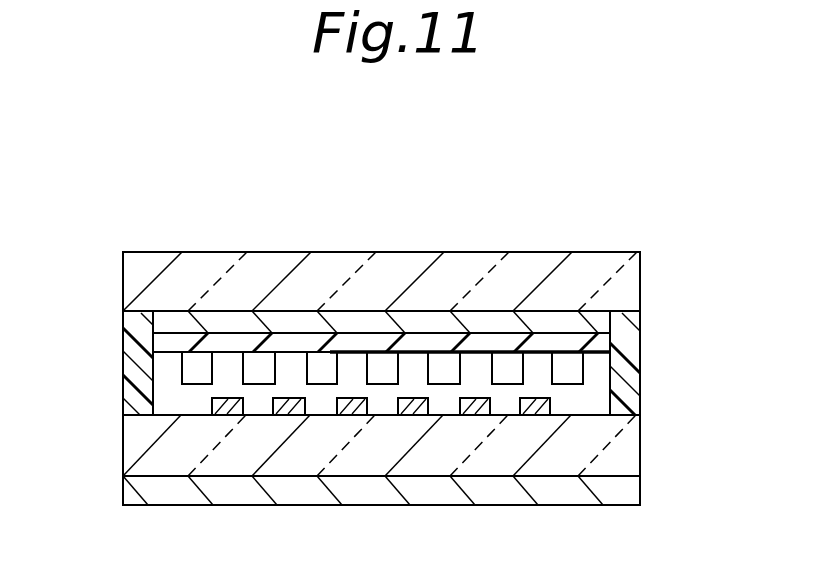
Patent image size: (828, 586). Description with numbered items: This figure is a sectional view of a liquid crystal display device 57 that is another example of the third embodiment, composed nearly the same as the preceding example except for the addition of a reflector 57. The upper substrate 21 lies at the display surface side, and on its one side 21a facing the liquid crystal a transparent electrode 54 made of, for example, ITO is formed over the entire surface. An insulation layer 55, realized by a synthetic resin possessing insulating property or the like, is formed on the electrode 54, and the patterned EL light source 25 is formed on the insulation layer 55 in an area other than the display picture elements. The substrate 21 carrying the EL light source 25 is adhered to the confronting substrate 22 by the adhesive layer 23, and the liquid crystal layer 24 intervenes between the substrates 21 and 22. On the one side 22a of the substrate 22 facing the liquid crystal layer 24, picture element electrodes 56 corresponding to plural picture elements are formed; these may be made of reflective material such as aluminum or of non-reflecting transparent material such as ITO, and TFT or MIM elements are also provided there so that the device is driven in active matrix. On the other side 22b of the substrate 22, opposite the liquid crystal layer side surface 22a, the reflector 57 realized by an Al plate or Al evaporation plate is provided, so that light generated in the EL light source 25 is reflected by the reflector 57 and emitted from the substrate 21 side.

The substrate 21 is at (263, 283).
The one side of the substrate 21a is at (479, 352).
The substrate 22 is at (153, 453).
The one side of the substrate 22a is at (572, 415).
The other side of the substrate 22b is at (303, 477).
The adhesive layer 23 is at (150, 386).
The liquid crystal layer 24 is at (410, 367).
The EL light source 25 is at (200, 367).
The transparent electrode 54 is at (168, 322).
The insulation layer 55 is at (598, 346).
The picture element electrodes 56 is at (415, 404).
The reflector 57 is at (331, 190).